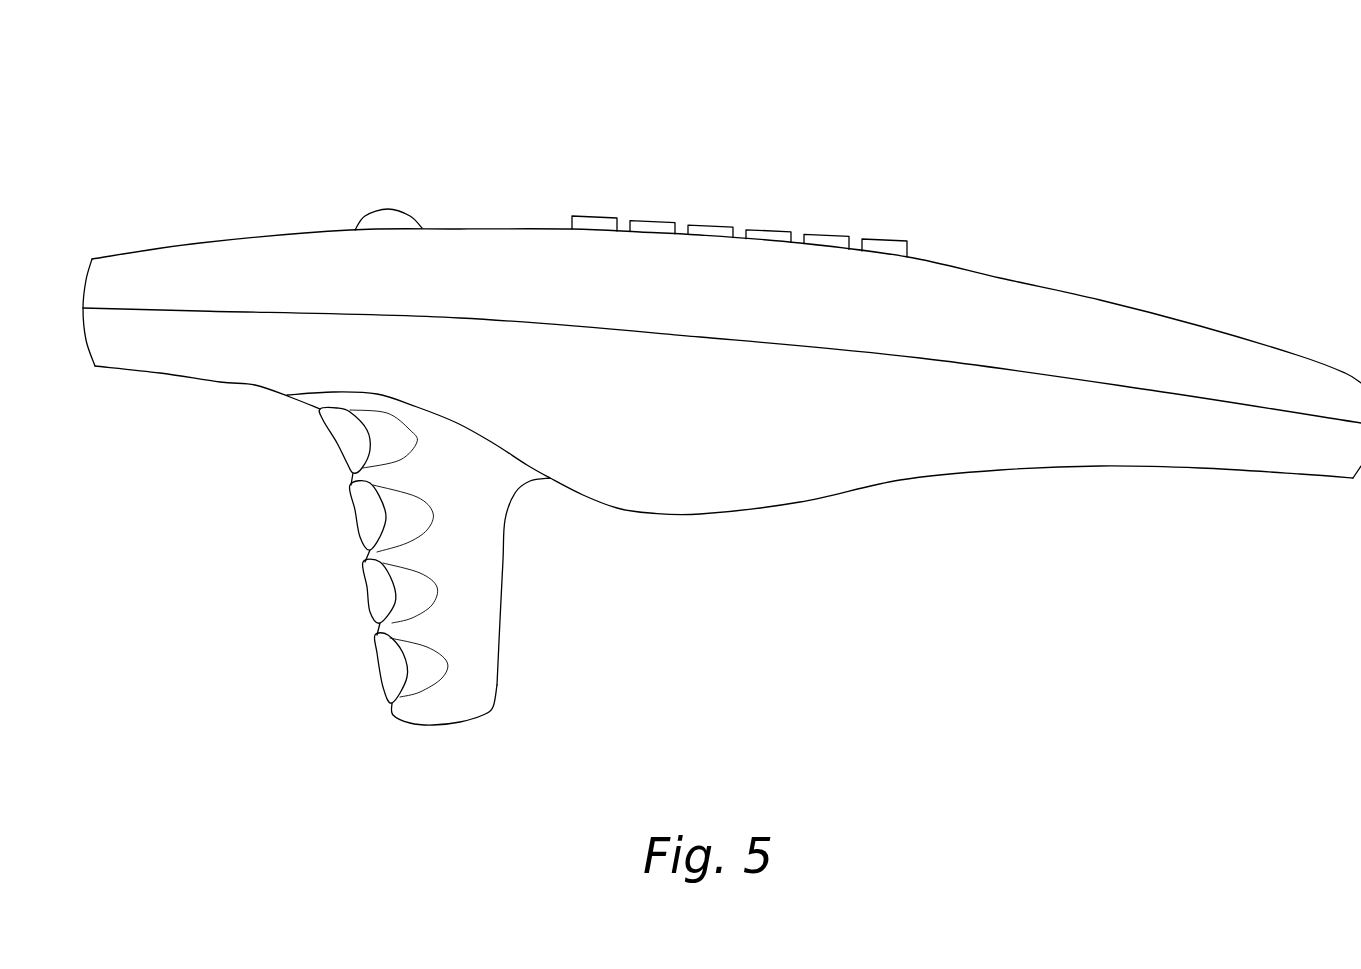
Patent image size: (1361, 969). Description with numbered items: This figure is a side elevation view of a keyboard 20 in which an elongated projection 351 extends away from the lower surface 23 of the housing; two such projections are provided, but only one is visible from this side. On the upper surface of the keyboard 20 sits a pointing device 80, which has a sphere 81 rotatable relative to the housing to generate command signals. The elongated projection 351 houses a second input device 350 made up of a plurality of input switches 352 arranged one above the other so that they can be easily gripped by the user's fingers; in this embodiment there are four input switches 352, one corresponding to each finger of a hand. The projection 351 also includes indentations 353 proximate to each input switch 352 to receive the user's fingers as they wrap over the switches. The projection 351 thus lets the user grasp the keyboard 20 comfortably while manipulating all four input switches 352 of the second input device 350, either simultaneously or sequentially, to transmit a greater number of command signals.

The keyboard 20 is at (732, 155).
The pointing device 80 is at (397, 146).
The sphere 81 is at (388, 212).
The lower surface 23 is at (255, 385).
The second input device 350 is at (378, 593).
The elongated projection 351 is at (498, 685).
The input switch 352 is at (337, 440).
The indentation 353 is at (437, 583).